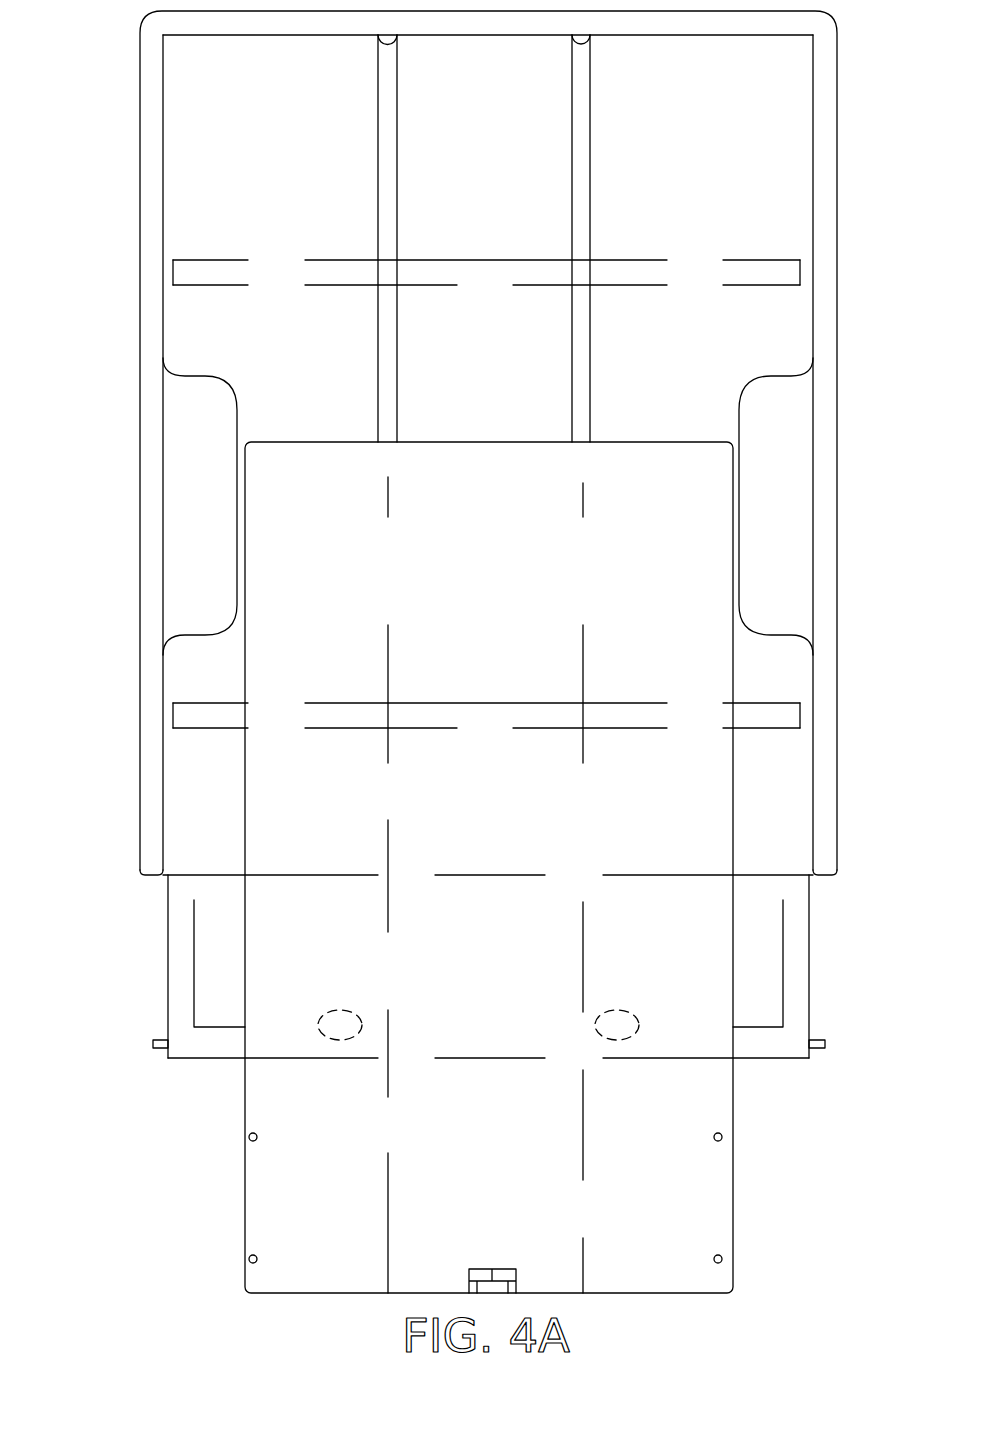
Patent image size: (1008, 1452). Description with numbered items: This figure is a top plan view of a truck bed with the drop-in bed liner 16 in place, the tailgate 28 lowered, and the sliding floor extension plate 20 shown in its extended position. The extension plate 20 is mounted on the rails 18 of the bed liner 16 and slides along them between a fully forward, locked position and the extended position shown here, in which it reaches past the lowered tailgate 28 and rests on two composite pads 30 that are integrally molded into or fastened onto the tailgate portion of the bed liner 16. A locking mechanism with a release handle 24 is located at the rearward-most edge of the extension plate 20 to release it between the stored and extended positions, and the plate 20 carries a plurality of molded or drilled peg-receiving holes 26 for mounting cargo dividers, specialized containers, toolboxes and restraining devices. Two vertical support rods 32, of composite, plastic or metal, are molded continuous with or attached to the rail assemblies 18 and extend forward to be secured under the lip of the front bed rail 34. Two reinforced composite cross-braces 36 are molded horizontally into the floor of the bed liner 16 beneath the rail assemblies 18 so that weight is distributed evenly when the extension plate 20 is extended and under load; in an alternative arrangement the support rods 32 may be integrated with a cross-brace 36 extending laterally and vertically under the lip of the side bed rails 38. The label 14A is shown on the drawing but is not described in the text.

The frame housing 14A is at (143, 877).
The truck bed liner 16 is at (207, 858).
The rails 18 is at (392, 308).
The sliding floor extension plate 20 is at (713, 1193).
The release handle 24 is at (502, 1275).
The peg-receiving holes 26 is at (257, 1257).
The tailgate 28 is at (757, 998).
The composite pads 30 is at (353, 1007).
The support rods 32 is at (397, 46).
The front bed rail 34 is at (748, 27).
The cross-braces 36 is at (312, 270).
The side bed rails 38 is at (137, 185).